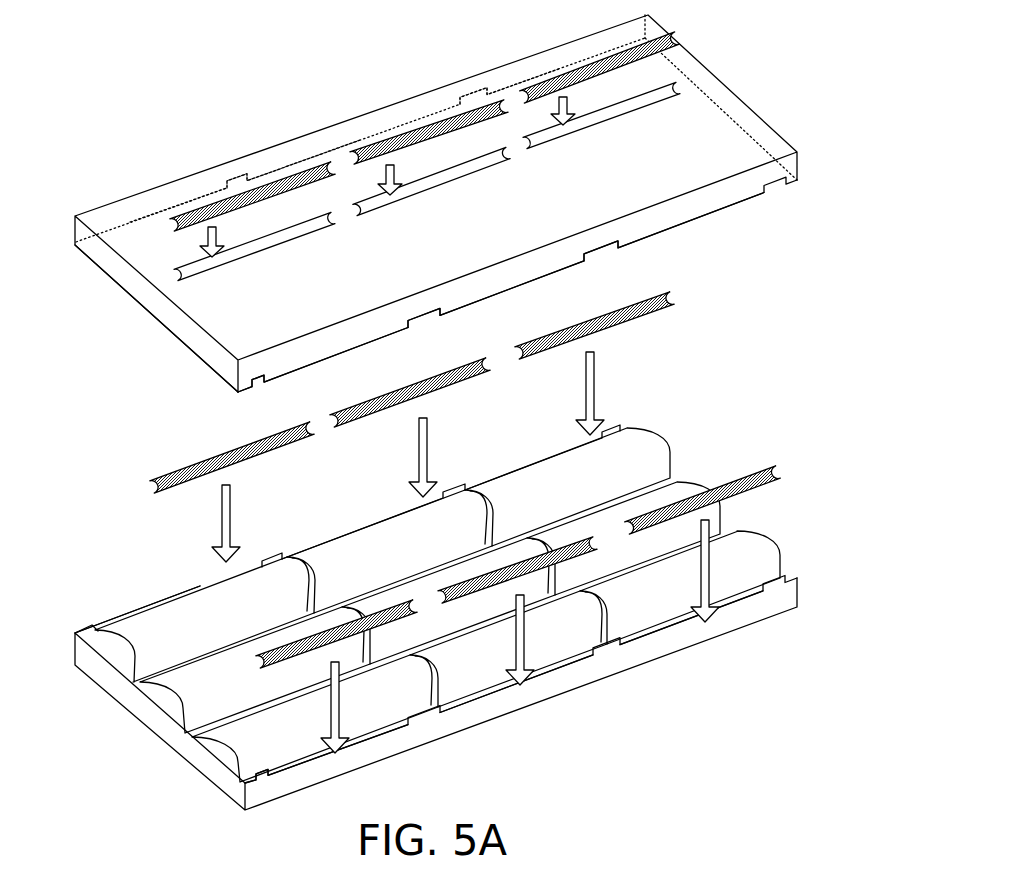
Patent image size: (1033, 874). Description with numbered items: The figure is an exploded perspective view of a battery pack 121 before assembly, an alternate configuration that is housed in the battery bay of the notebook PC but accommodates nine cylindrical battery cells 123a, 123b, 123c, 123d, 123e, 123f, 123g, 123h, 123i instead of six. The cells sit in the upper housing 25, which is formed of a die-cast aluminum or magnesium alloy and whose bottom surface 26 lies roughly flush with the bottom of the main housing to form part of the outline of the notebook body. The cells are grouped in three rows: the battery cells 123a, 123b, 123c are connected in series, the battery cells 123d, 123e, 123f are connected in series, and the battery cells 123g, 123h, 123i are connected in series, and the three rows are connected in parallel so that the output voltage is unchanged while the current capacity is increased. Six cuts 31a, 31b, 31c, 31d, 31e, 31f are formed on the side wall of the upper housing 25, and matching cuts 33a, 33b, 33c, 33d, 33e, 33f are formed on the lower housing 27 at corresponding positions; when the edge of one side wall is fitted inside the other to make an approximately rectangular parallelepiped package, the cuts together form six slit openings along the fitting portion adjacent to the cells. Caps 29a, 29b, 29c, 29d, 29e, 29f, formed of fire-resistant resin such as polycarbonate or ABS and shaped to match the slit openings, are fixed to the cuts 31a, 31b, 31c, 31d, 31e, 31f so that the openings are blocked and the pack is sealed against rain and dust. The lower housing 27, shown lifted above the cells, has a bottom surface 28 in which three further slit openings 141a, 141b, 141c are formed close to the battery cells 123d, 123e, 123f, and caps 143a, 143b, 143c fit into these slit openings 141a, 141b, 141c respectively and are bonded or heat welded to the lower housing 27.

The battery pack 121 is at (436, 203).
The bottom surface of the lower housing 28 is at (350, 286).
The lower housing 27 is at (178, 343).
The cut 33a is at (313, 357).
The cut 33b is at (480, 297).
The cut 33c is at (658, 222).
The cut 33d is at (183, 202).
The cut 33e is at (315, 156).
The cut 33f is at (490, 93).
The slit opening 141a is at (213, 262).
The slit opening 141b is at (393, 207).
The slit opening 141c is at (555, 145).
The cap 143a is at (282, 180).
The cap 143b is at (420, 126).
The cap 143c is at (578, 68).
The bottom surface of the upper housing 26 is at (432, 551).
The upper housing 25 is at (118, 685).
The cap 29a is at (280, 647).
The cap 29b is at (457, 583).
The cap 29c is at (633, 519).
The cap 29d is at (247, 462).
The cap 29e is at (400, 404).
The cap 29f is at (533, 357).
The cut 31a is at (323, 767).
The cut 31b is at (483, 707).
The cut 31c is at (663, 640).
The cut 31d is at (178, 598).
The cut 31e is at (354, 532).
The cut 31f is at (617, 430).
The battery cell 123a is at (303, 743).
The battery cell 123b is at (445, 683).
The battery cell 123c is at (613, 603).
The battery cell 123d is at (243, 700).
The battery cell 123e is at (493, 668).
The battery cell 123f is at (682, 598).
The battery cell 123g is at (200, 642).
The battery cell 123h is at (373, 576).
The battery cell 123i is at (553, 506).